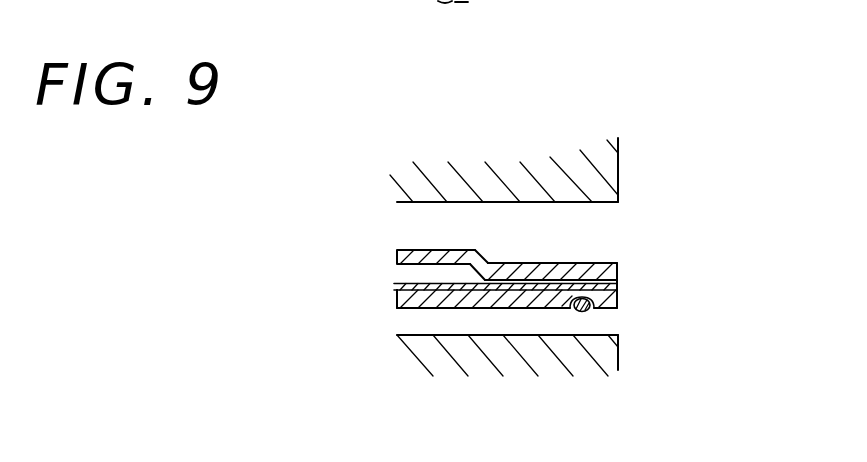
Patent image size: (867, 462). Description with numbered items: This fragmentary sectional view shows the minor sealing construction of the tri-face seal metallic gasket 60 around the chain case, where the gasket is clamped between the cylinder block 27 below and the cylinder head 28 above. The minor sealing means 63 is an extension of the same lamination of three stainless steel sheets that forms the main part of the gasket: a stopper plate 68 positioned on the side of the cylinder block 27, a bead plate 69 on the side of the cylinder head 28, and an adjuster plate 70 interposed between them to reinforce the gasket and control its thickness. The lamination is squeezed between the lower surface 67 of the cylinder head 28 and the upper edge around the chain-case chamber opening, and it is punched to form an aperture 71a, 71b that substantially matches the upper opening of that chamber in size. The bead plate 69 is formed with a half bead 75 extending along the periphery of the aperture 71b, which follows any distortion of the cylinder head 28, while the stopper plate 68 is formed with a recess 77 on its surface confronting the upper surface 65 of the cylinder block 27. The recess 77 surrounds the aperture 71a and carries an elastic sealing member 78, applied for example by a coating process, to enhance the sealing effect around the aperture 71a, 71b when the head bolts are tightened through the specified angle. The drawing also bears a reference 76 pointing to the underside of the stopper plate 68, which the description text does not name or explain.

The cylinder block 27 is at (603, 355).
The cylinder head 28 is at (603, 182).
The metallic gasket 60 is at (562, 262).
The minor sealing means 63 is at (462, 318).
The upper surface of the cylinder block 65 is at (607, 338).
The lower surface of the cylinder head 67 is at (578, 203).
The stopper plate 68 is at (405, 310).
The bead plate 69 is at (408, 248).
The adjuster plate 70 is at (410, 288).
The aperture 71a is at (620, 298).
The aperture 71b is at (620, 272).
The half bead 75 is at (482, 264).
The lower surface of lower layer 76 is at (513, 308).
The recess 77 is at (580, 316).
The elastic sealing member 78 is at (588, 316).